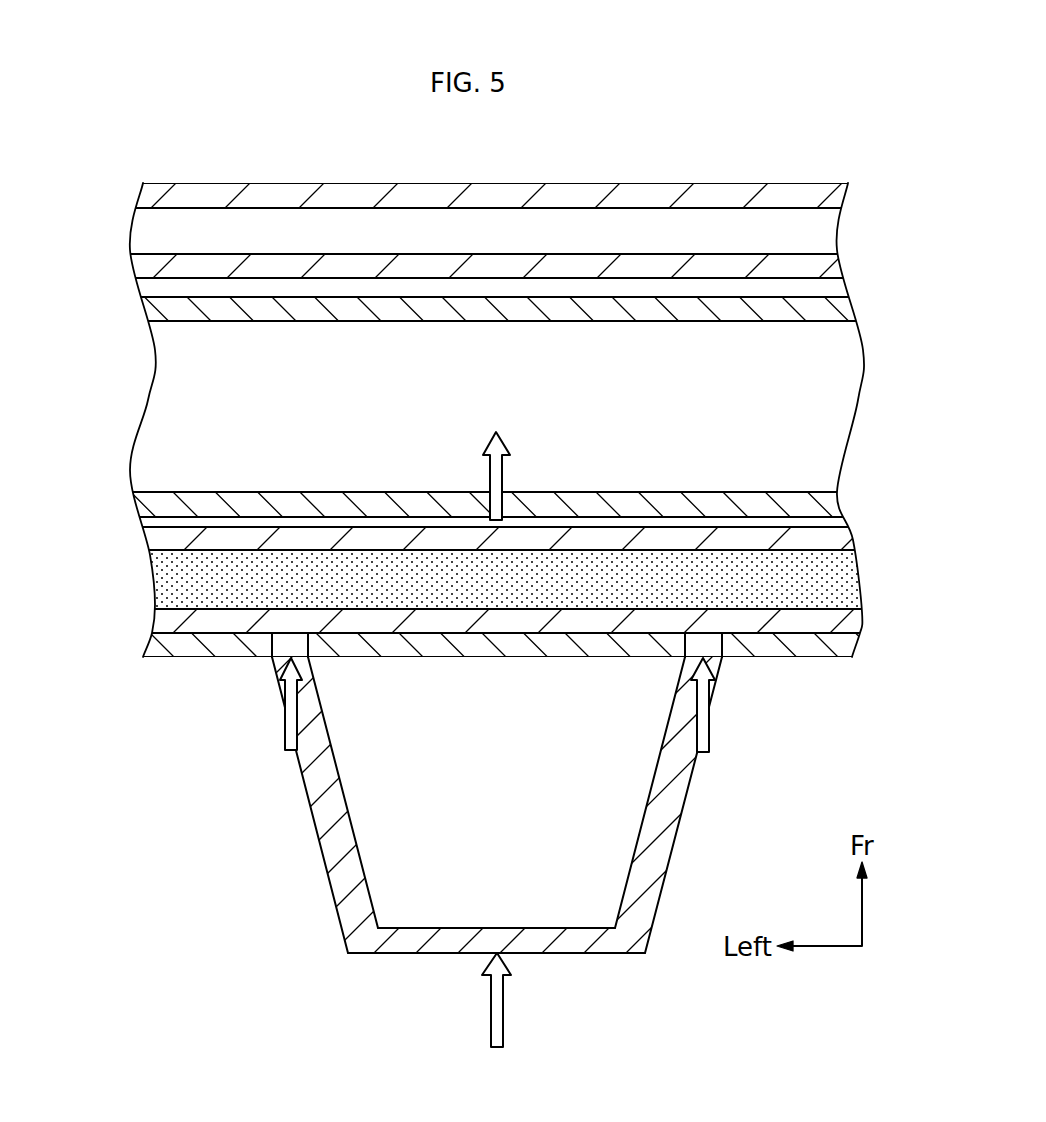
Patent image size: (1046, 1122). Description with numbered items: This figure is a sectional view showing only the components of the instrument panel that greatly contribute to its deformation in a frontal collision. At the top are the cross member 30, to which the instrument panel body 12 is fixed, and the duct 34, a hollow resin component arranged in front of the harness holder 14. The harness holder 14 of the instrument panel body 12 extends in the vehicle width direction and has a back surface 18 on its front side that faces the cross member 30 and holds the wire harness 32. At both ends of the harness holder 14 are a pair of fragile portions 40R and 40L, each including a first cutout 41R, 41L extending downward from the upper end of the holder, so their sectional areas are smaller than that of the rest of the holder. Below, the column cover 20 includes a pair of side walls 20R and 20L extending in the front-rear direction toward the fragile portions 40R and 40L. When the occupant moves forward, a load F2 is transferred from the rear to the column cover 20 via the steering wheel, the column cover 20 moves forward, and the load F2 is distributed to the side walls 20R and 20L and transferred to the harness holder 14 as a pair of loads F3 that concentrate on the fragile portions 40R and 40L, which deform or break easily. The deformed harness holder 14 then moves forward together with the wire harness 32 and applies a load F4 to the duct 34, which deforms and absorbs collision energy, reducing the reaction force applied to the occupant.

The instrument panel body 12 is at (508, 604).
The harness holder 14 is at (448, 645).
The back surface 18 is at (240, 633).
The column cover 20 is at (503, 793).
The left side wall 20L is at (214, 793).
The right side wall 20R is at (781, 793).
The cross member 30 is at (503, 246).
The wire harness 32 is at (848, 588).
The duct 34 is at (823, 312).
The left fragile portion 40L is at (205, 670).
The right fragile portion 40R is at (816, 671).
The first cutout 41L is at (270, 647).
The first cutout 41R is at (703, 643).
The load F2 is at (497, 1002).
The loads F3 is at (292, 706).
The load F4 is at (502, 478).